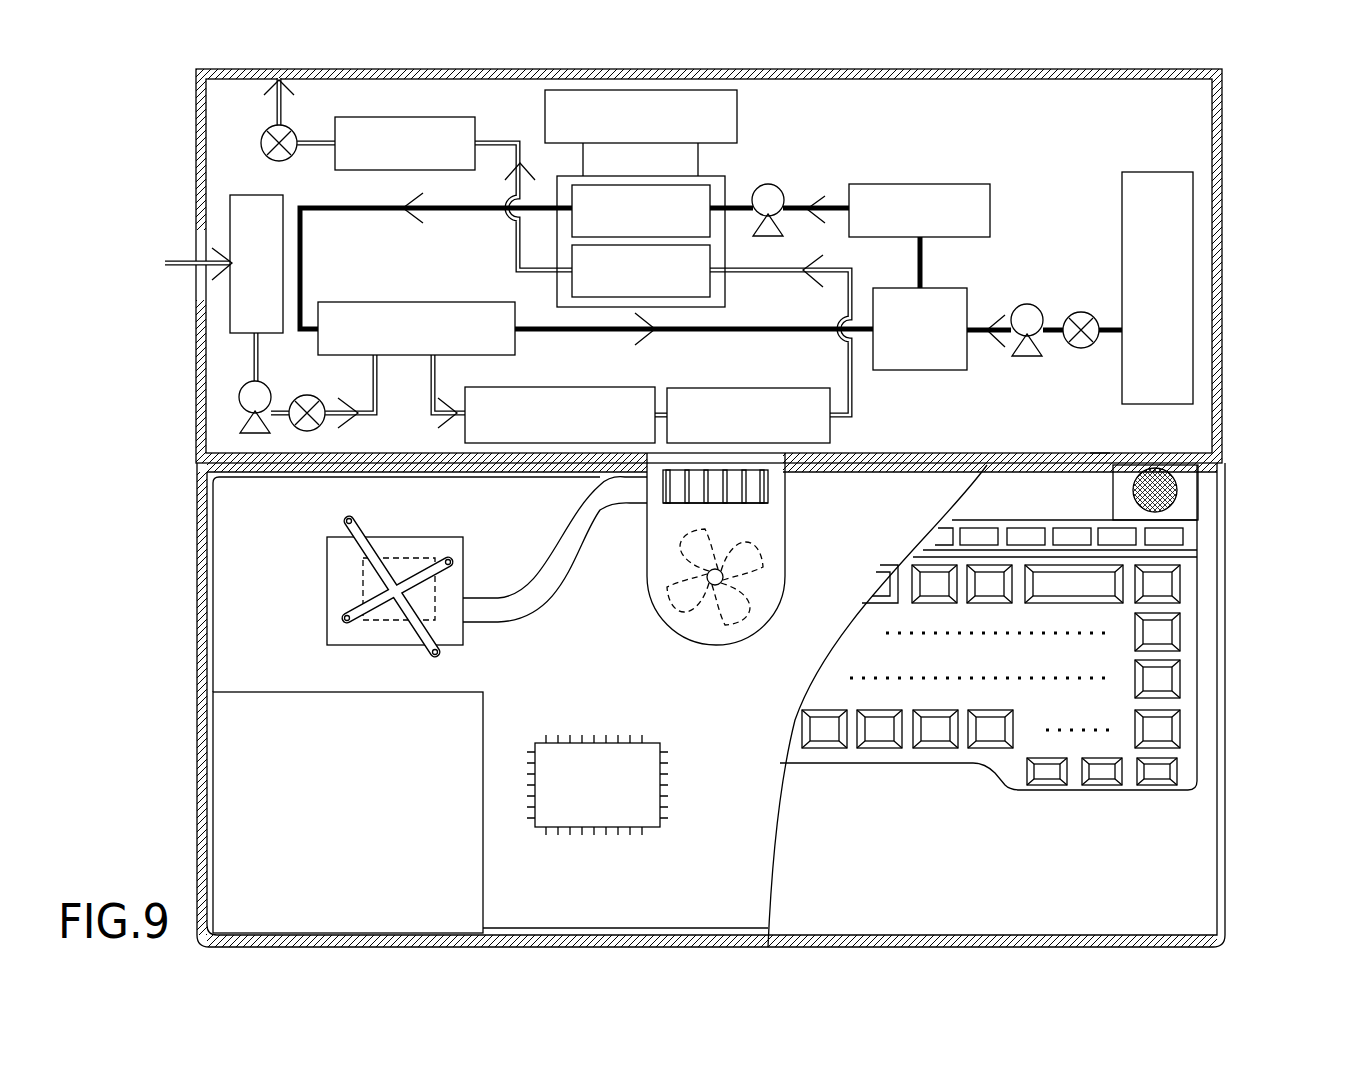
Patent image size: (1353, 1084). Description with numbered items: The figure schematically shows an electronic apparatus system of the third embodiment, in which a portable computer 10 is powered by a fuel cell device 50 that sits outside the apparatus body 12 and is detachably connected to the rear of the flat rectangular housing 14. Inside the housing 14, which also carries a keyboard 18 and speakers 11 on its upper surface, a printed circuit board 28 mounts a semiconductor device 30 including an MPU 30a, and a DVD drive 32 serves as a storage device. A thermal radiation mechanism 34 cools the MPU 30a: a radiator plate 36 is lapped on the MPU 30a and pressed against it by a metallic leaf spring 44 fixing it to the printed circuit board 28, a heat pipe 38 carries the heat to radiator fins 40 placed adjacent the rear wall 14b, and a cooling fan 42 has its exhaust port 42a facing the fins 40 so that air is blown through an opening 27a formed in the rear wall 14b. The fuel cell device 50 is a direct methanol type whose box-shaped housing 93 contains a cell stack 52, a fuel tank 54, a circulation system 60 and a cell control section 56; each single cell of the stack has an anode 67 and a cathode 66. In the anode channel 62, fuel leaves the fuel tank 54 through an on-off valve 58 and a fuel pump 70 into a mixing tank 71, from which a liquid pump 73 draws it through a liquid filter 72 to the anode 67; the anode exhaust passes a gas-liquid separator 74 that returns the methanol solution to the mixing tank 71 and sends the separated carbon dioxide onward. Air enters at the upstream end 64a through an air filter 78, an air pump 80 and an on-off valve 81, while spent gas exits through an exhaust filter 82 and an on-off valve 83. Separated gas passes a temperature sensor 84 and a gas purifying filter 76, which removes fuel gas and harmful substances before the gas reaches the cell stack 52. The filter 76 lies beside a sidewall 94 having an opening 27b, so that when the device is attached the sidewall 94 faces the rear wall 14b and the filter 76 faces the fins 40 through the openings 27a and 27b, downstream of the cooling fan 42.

The portable computer 10 is at (167, 590).
The speakers 11 is at (1133, 490).
The apparatus body 12 is at (1245, 603).
The housing 14 is at (197, 642).
The rear wall 14b is at (262, 478).
The keyboard 18 is at (937, 750).
The opening 27a is at (678, 468).
The opening 27b is at (805, 455).
The printed circuit board 28 is at (775, 878).
The heat generating component (CPU) 30 is at (632, 830).
The MPU 30a is at (400, 568).
The DVD drive 32 is at (215, 795).
The thermal radiation mechanism 34 is at (557, 603).
The radiator plate 36 is at (452, 537).
The heat pipe 38 is at (498, 605).
The radiator fins 40 is at (772, 490).
The cooling fan 42 is at (718, 647).
The exhaust port 42a is at (757, 503).
The metallic leaf spring 44 is at (345, 551).
The fuel cell device 50 is at (1258, 192).
The cell stack 52 is at (557, 285).
The fuel tank 54 is at (1138, 172).
The cell control section 56 is at (738, 98).
The on-off valve 58 is at (1081, 312).
The circulation system 60 is at (360, 198).
The anode channel 62 is at (303, 266).
The upstream end 64a is at (205, 283).
The cathode 66 is at (722, 282).
The anode 67 is at (722, 235).
The fuel pump 70 is at (1027, 304).
The mixing tank 71 is at (947, 370).
The liquid filter 72 is at (963, 184).
The liquid pump 73 is at (768, 185).
The gas-liquid separator 74 is at (449, 302).
The gas purifying filter 76 is at (786, 388).
The air filter 78 is at (238, 195).
The air pump 80 is at (239, 397).
The on-off valve 81 is at (306, 395).
The exhaust filter 82 is at (478, 123).
The on-off valve 83 is at (262, 132).
The temperature sensor 84 is at (545, 387).
The housing 93 is at (1226, 100).
The sidewall 94 is at (1100, 453).